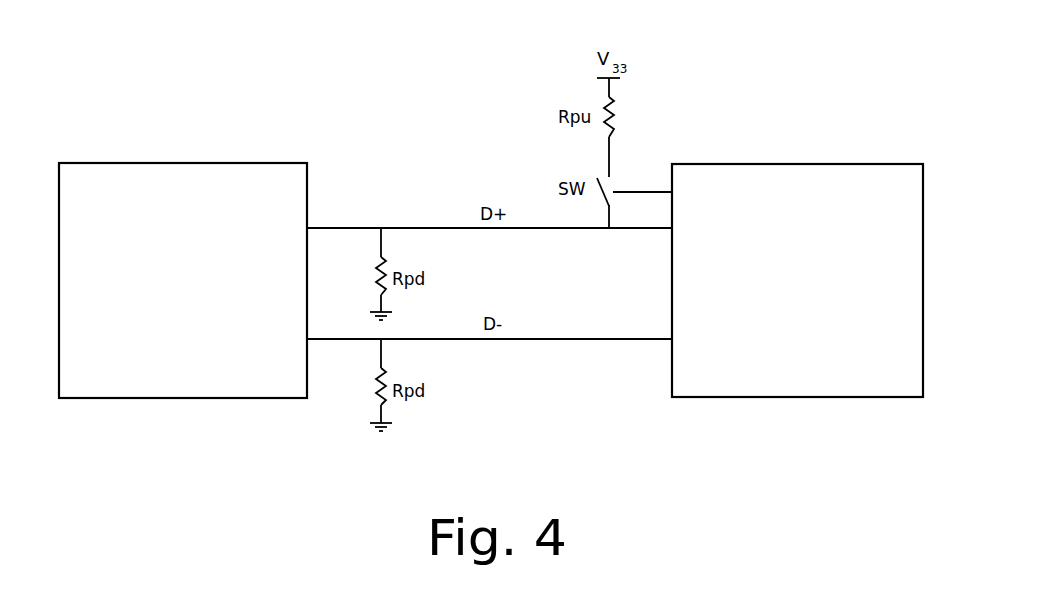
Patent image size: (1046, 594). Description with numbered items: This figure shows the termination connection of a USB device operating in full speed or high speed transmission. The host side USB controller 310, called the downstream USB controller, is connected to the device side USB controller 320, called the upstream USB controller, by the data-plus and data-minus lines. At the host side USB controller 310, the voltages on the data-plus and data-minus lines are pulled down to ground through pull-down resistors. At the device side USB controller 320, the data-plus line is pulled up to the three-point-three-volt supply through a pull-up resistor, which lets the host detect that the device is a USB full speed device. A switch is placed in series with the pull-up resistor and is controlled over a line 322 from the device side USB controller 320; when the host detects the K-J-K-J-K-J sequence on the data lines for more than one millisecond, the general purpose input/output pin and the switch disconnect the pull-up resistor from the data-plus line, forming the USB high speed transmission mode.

The host side USB controller 310 is at (176, 163).
The device side USB controller 320 is at (773, 164).
The switch control line 322 is at (625, 192).